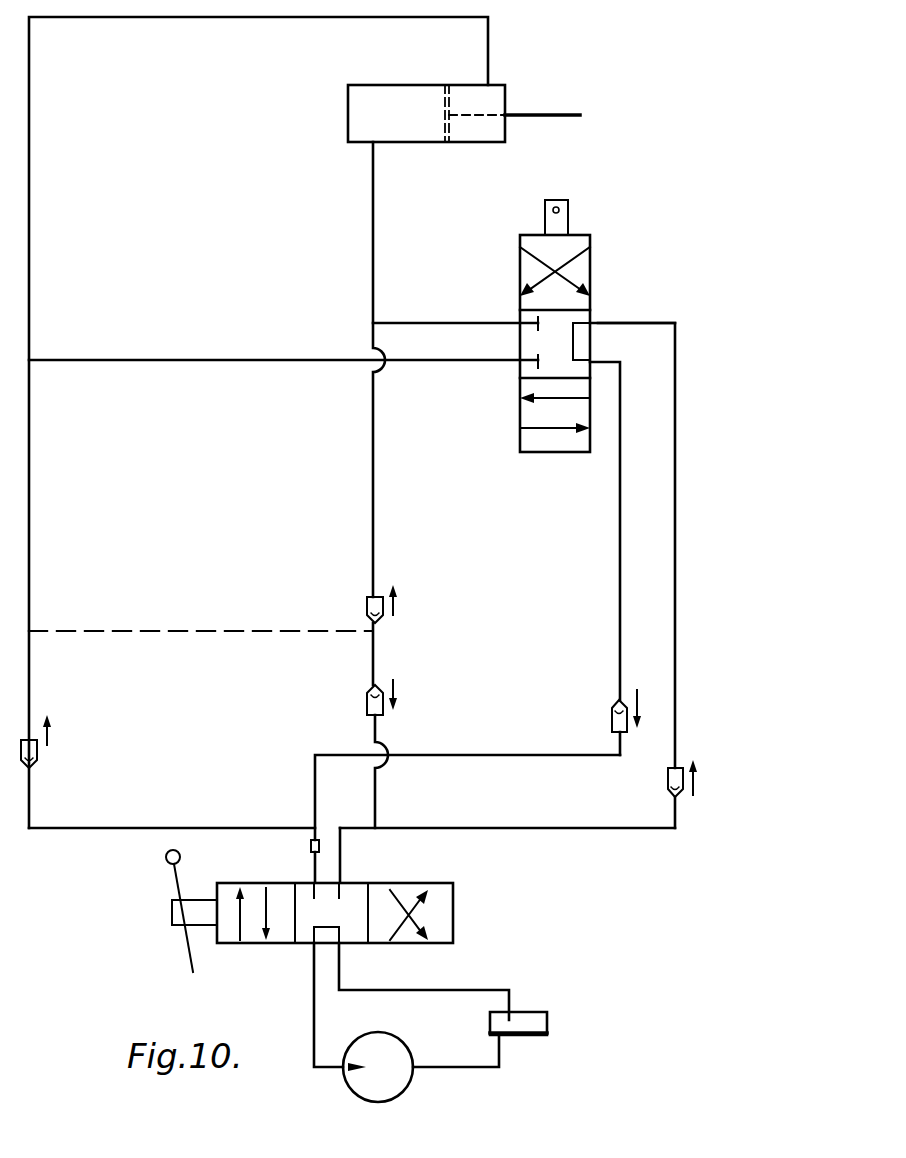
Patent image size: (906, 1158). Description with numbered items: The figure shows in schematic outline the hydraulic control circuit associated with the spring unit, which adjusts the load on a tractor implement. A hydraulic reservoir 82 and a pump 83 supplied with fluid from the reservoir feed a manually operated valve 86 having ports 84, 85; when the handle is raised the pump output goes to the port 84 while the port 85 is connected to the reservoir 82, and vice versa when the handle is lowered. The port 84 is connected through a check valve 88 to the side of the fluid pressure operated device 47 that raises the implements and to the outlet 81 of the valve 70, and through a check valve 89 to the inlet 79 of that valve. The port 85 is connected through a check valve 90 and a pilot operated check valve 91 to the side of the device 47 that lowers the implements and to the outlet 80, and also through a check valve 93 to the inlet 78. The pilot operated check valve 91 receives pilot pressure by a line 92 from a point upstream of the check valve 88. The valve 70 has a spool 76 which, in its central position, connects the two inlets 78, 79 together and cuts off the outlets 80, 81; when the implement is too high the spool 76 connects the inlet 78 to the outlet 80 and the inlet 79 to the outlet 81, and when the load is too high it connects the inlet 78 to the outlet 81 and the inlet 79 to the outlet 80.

The fluid pressure operated device 47 is at (421, 115).
The valve 70 is at (565, 253).
The spool 76 is at (556, 222).
The inlet 78 is at (612, 322).
The inlet 79 is at (591, 363).
The outlet 80 is at (520, 322).
The outlet 81 is at (520, 364).
The hydraulic reservoir 82 is at (528, 1022).
The pump 83 is at (392, 1053).
The port 84 is at (313, 882).
The port 85 is at (340, 882).
The manually operated valve 86 is at (255, 927).
The check valve 88 is at (34, 765).
The check valve 89 is at (612, 722).
The check valve 90 is at (367, 700).
The pilot operated check valve 91 is at (367, 610).
The line 92 is at (200, 633).
The check valve 93 is at (668, 778).